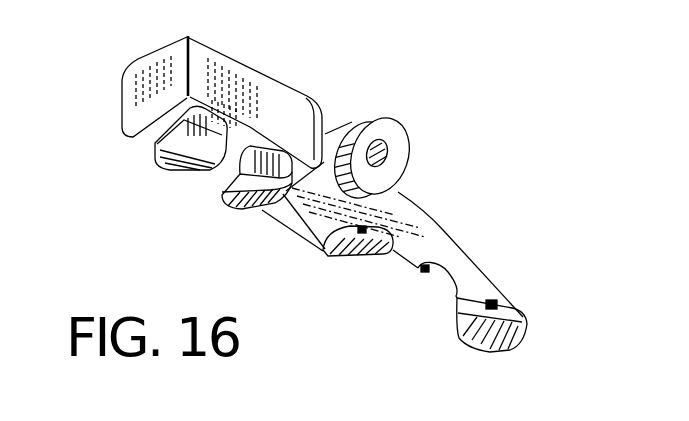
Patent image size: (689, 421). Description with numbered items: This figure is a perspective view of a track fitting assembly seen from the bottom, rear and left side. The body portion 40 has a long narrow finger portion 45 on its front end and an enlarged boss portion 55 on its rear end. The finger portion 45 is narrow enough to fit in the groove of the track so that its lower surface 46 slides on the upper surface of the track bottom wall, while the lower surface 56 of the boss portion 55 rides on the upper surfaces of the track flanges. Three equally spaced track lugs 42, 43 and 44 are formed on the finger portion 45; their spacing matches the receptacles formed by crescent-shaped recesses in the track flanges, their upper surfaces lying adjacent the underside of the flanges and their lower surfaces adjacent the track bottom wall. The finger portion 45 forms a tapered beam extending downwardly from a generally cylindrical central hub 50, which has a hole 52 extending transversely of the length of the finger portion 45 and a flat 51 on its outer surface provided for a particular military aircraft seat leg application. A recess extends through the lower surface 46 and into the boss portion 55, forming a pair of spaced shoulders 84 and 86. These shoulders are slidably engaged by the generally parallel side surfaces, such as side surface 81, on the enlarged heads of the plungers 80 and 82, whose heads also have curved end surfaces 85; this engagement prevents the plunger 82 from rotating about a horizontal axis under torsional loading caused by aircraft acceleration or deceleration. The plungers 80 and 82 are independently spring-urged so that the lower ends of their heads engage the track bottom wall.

The body portion 40 is at (306, 93).
The track lug 42 is at (490, 337).
The track lug 43 is at (457, 330).
The track lug 44 is at (341, 258).
The finger portion 45 is at (445, 253).
The lower surface 46 is at (458, 303).
The central hub 50 is at (373, 126).
The flat 51 is at (408, 164).
The hole 52 is at (382, 145).
The boss portion 55 is at (121, 92).
The lower surface 56 is at (135, 136).
The plunger 80 is at (156, 172).
The side surface 81 is at (232, 115).
The plunger 82 is at (236, 216).
The shoulder 84 is at (232, 200).
The curved end surface 85 is at (183, 90).
The shoulder 86 is at (258, 213).